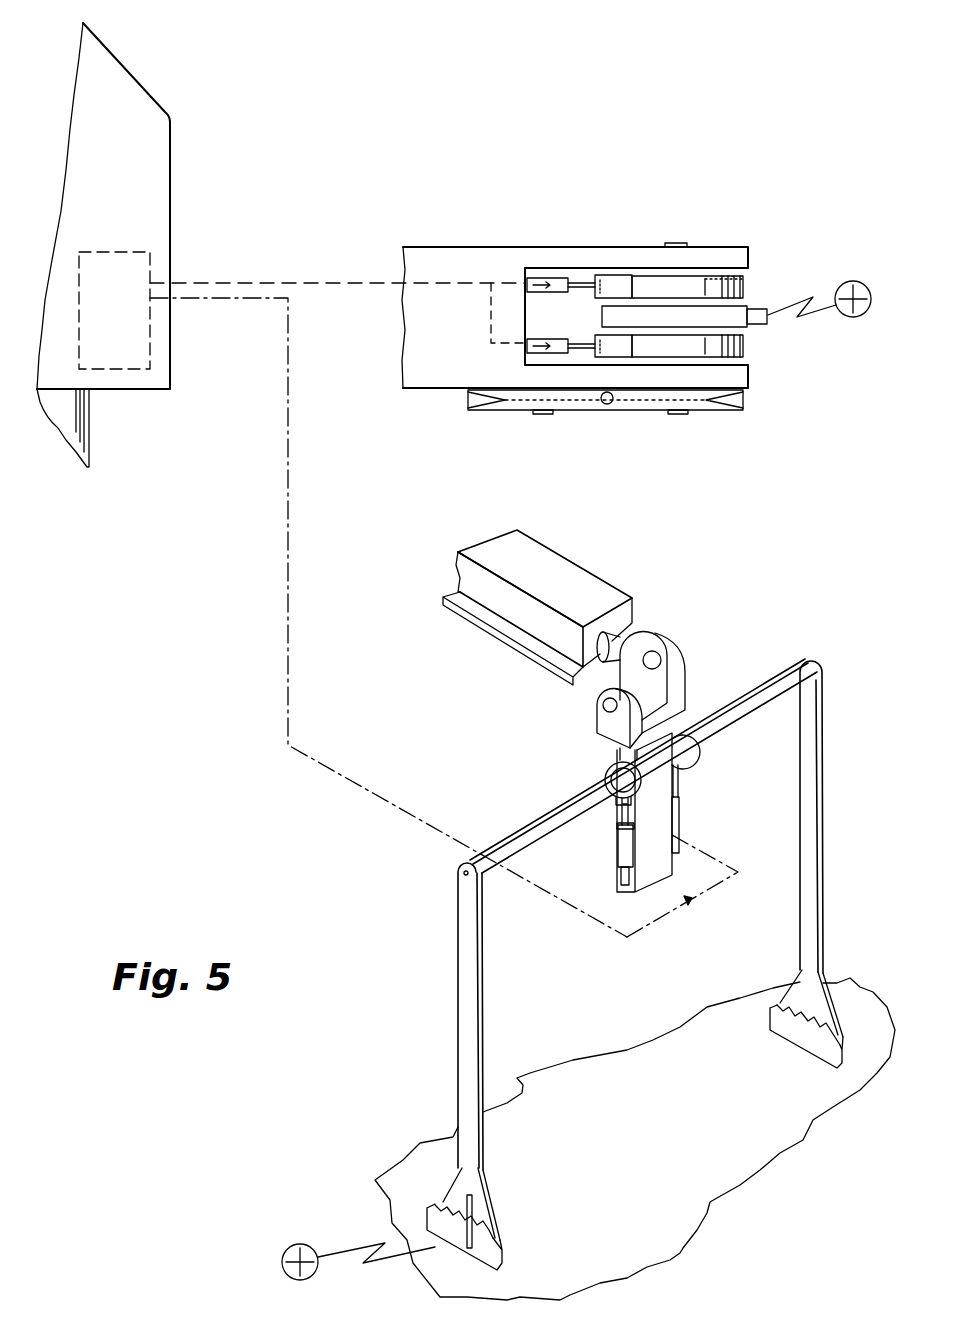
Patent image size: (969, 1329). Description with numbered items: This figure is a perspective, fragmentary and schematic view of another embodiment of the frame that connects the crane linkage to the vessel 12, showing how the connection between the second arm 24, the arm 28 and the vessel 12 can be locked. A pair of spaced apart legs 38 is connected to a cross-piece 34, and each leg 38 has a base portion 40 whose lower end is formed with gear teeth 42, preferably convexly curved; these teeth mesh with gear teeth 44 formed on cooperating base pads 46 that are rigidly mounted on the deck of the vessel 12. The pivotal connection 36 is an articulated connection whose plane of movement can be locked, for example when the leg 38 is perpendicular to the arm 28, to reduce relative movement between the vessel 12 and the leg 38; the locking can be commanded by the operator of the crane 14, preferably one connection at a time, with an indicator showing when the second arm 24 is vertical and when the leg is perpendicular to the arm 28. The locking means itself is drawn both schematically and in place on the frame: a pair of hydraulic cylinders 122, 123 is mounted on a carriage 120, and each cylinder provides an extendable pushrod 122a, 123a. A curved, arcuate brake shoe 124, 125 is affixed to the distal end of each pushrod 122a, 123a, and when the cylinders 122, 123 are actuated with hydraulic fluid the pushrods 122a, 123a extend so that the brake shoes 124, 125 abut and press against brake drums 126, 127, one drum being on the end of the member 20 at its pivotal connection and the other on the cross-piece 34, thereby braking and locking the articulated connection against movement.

The vessel 12 is at (595, 1075).
The crane 14 is at (141, 84).
The arm end portion 20 is at (450, 327).
The second arm 24 is at (602, 318).
The arm 28 is at (580, 578).
The cross-piece 34 is at (523, 836).
The pivotal connection 36 is at (650, 640).
The leg 38 is at (458, 990).
The base portion 40 is at (487, 1188).
The gear teeth 42 is at (487, 1228).
The gear teeth 44 is at (502, 1257).
The base pad 46 is at (392, 1205).
The carriage 120 is at (525, 322).
The hydraulic cylinder 122 is at (553, 283).
The pushrod 122a is at (617, 816).
The hydraulic cylinder 123 is at (553, 352).
The pushrod 123a is at (583, 347).
The brake shoe 124 is at (622, 287).
The brake shoe 125 is at (615, 348).
The brake drum 126 is at (728, 290).
The brake drum 127 is at (693, 738).